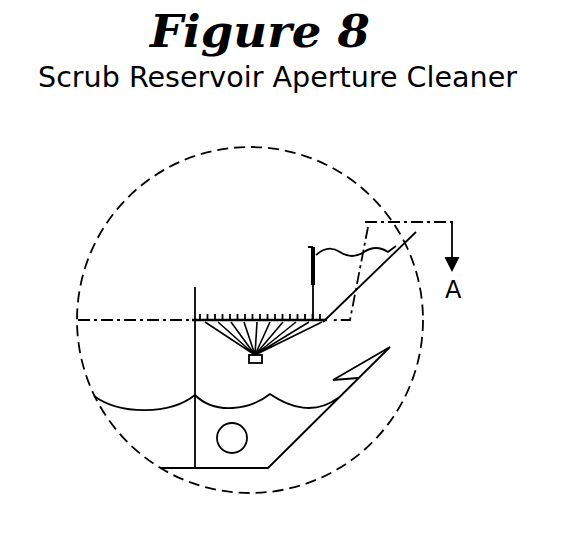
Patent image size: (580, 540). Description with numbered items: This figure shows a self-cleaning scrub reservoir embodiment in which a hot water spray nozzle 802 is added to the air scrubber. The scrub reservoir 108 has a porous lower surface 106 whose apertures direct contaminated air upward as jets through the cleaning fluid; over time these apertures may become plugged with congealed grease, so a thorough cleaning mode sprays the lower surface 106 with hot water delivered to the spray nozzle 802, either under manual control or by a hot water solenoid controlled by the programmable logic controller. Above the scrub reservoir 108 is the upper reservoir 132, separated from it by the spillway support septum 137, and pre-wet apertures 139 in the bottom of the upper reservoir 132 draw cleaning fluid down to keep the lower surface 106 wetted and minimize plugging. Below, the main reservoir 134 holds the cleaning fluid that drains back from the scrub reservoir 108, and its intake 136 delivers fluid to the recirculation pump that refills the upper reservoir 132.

The lower surface 106 is at (193, 336).
The scrub reservoir 108 is at (233, 295).
The upper reservoir 132 is at (332, 252).
The main reservoir 134 is at (110, 400).
The intake 136 is at (222, 452).
The spillway support septum 137 is at (314, 292).
The pre-wet apertures 139 is at (325, 325).
The hot water spray nozzle 802 is at (258, 364).